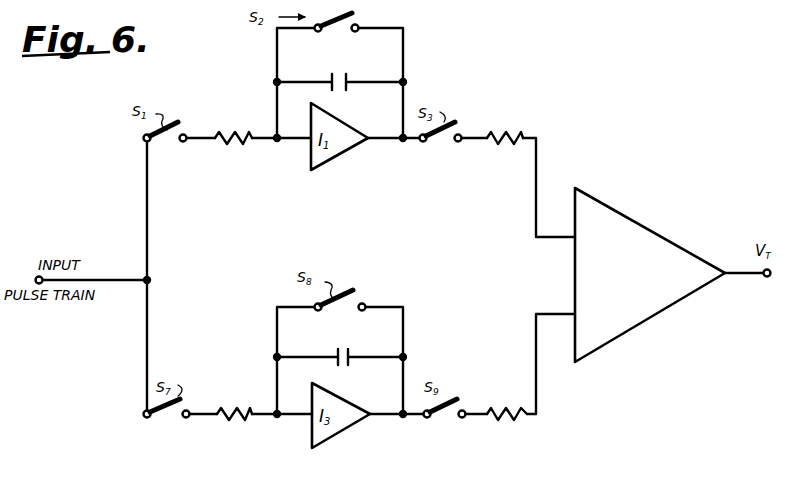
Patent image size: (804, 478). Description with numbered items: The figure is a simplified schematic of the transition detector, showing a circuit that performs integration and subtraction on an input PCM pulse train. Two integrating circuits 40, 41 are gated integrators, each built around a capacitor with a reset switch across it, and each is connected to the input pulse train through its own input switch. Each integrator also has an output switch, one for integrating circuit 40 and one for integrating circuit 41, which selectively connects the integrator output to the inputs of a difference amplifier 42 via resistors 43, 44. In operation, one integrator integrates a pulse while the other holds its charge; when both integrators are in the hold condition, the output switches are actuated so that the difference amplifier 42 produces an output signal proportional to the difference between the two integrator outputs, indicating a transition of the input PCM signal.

The integrating circuit 40 is at (407, 78).
The integrating circuit 41 is at (407, 367).
The difference amplifier 42 is at (700, 214).
The resistor 43 is at (532, 115).
The resistor 44 is at (503, 419).